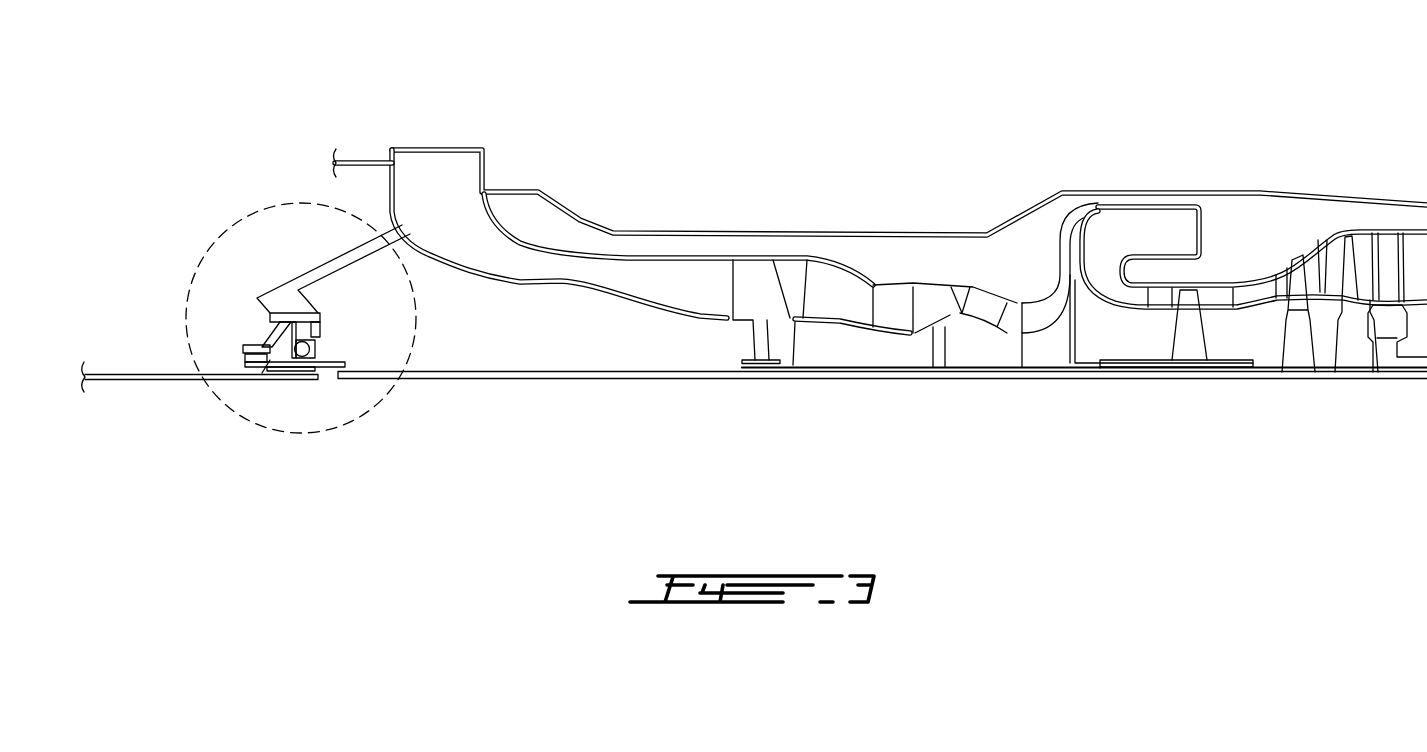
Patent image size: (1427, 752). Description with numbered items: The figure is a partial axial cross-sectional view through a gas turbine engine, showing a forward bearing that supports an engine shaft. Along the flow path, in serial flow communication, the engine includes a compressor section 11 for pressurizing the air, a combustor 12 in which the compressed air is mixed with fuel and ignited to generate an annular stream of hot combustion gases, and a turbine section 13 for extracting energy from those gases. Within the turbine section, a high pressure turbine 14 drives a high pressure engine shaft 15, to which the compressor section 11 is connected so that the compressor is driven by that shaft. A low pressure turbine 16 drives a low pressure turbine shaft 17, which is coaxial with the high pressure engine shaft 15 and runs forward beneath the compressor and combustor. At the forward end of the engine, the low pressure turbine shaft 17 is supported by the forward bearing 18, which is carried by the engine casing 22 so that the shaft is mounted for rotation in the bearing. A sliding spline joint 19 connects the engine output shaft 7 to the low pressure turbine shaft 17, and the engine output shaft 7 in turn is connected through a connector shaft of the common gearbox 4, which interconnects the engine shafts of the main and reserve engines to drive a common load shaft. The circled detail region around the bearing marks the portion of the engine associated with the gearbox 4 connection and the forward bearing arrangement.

The common gearbox 4 is at (245, 218).
The engine output shaft 7 is at (103, 382).
The compressor section 11 is at (940, 247).
The combustor 12 is at (1157, 232).
The turbine section 13 is at (1322, 202).
The high pressure turbine 14 is at (1184, 337).
The high pressure engine shaft 15 is at (973, 337).
The low pressure turbine 16 is at (1412, 340).
The low pressure turbine shaft 17 is at (470, 382).
The forward bearing 18 is at (327, 412).
The sliding spline joint 19 is at (279, 376).
The engine casing 22 is at (395, 232).